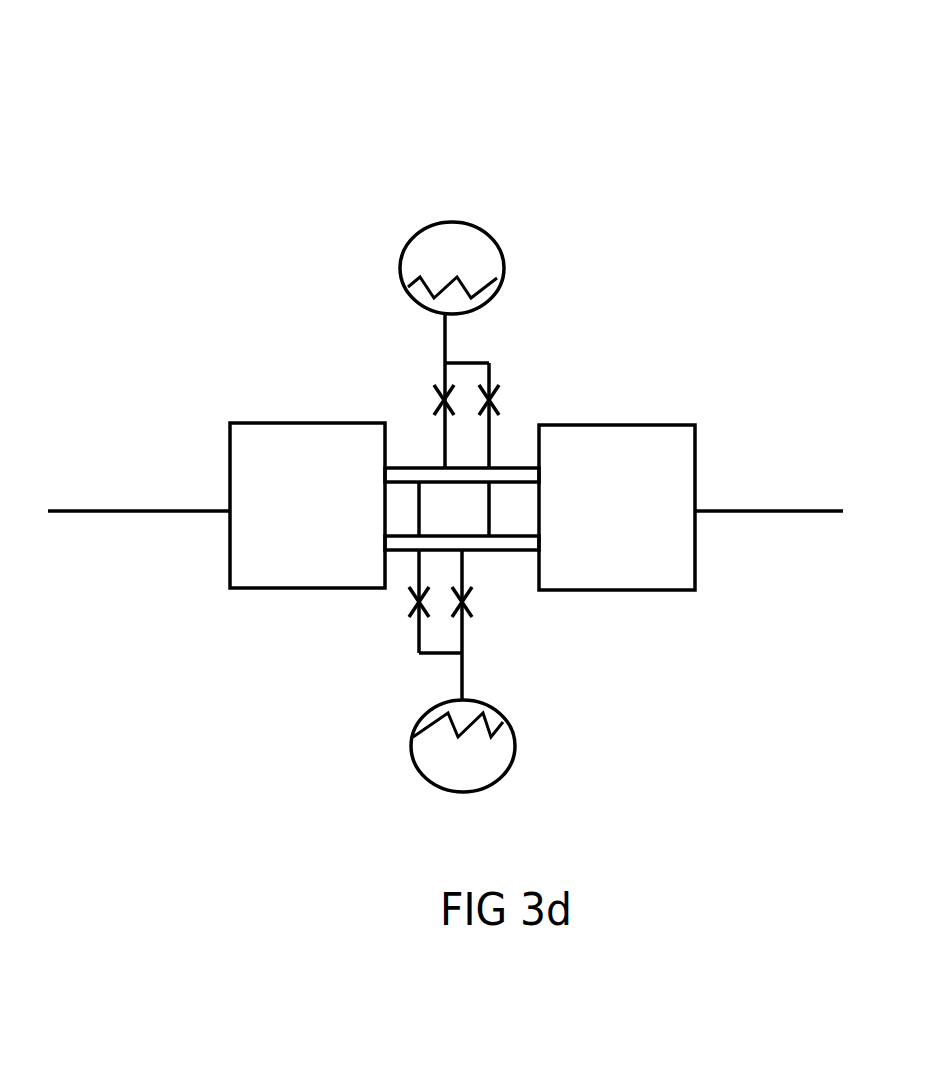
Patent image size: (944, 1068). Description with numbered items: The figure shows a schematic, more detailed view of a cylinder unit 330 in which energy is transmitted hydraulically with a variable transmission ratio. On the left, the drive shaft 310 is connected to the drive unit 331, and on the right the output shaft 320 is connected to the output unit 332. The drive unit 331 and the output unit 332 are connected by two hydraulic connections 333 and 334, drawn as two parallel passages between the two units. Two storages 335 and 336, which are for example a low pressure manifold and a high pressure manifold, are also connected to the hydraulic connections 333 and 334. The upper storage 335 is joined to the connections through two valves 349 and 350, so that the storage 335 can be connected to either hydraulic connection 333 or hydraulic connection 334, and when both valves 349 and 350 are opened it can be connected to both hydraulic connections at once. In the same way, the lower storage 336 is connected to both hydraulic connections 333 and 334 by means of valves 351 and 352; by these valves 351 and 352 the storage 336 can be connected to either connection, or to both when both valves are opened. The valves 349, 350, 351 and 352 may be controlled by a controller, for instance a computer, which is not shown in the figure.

The drive shaft 310 is at (128, 508).
The output shaft 320 is at (768, 508).
The cylinder unit 330 is at (367, 143).
The drive unit 331 is at (348, 509).
The output unit 332 is at (655, 508).
The hydraulic connection 333 is at (518, 464).
The hydraulic connection 334 is at (508, 550).
The storage 335 is at (403, 283).
The storage 336 is at (413, 748).
The valve 349 is at (440, 390).
The valve 350 is at (500, 392).
The valve 351 is at (407, 603).
The valve 352 is at (470, 603).